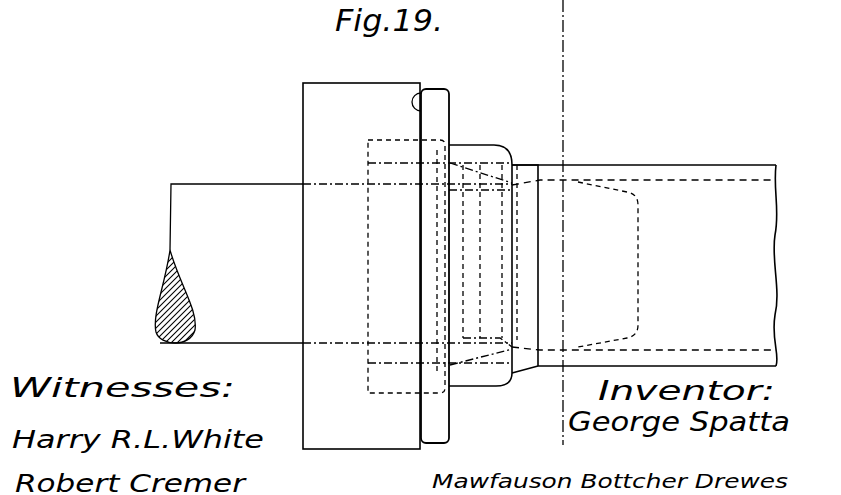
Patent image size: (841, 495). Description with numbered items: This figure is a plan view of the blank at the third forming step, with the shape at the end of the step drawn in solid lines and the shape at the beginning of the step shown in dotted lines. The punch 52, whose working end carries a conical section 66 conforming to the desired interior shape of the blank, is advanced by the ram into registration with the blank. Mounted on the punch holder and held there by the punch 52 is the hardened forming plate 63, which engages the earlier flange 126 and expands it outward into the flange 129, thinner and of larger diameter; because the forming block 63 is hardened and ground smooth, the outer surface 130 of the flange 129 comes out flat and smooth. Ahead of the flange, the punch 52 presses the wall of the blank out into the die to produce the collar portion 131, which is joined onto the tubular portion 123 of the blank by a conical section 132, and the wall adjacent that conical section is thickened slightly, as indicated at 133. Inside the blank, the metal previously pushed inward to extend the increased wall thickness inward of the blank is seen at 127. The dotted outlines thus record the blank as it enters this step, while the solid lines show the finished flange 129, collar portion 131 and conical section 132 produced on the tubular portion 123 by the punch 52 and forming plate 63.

The punch 52 is at (370, 163).
The hardened forming plate 63 is at (367, 90).
The conical section 66 is at (644, 234).
The tubular portion of the blank 123 is at (641, 166).
The flange 126 is at (389, 146).
The inwardly extended thickened wall 127 is at (511, 158).
The flange 129 is at (448, 112).
The outer surface of the flange 130 is at (422, 93).
The collar portion 131 is at (472, 148).
The conical section 132 is at (518, 168).
The thickened wall 133 is at (579, 179).